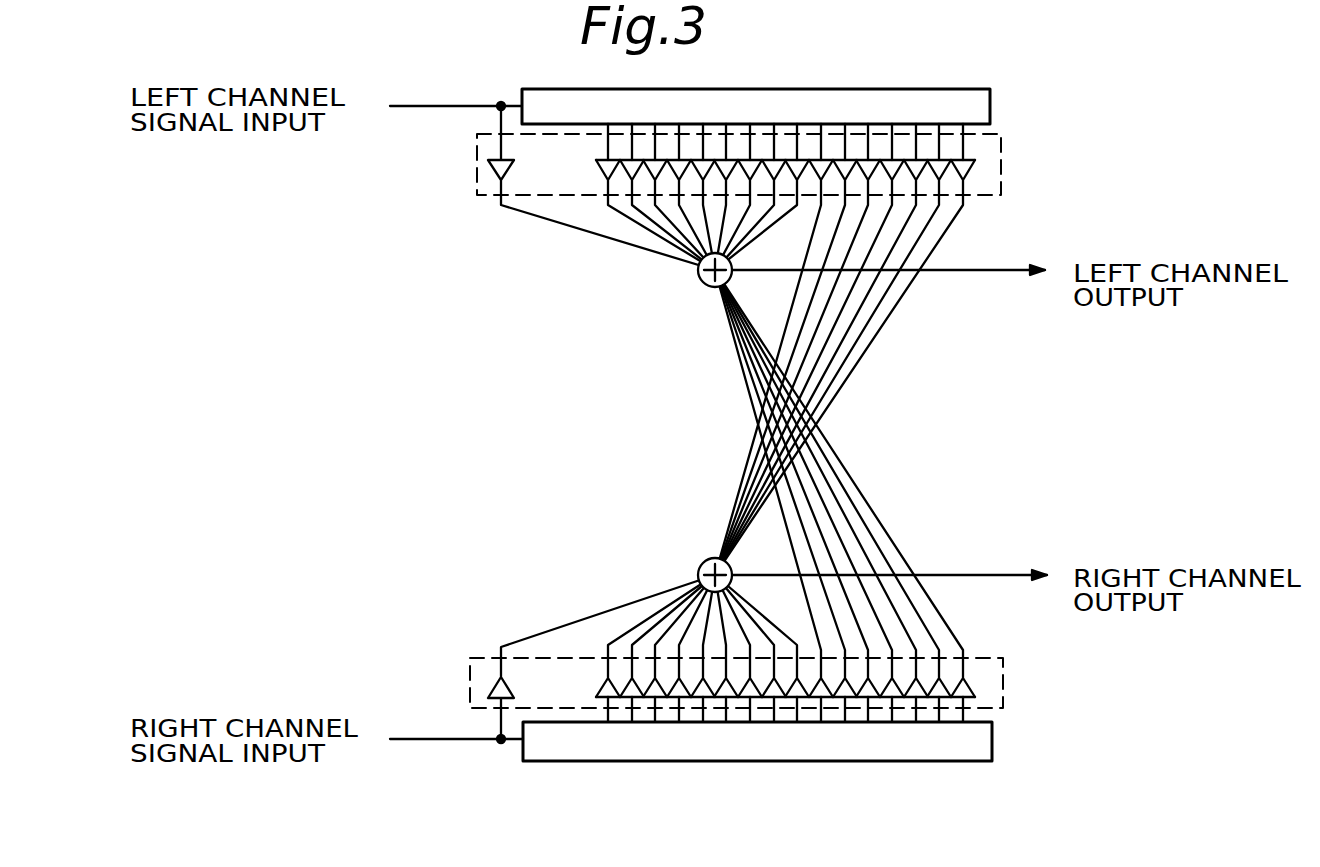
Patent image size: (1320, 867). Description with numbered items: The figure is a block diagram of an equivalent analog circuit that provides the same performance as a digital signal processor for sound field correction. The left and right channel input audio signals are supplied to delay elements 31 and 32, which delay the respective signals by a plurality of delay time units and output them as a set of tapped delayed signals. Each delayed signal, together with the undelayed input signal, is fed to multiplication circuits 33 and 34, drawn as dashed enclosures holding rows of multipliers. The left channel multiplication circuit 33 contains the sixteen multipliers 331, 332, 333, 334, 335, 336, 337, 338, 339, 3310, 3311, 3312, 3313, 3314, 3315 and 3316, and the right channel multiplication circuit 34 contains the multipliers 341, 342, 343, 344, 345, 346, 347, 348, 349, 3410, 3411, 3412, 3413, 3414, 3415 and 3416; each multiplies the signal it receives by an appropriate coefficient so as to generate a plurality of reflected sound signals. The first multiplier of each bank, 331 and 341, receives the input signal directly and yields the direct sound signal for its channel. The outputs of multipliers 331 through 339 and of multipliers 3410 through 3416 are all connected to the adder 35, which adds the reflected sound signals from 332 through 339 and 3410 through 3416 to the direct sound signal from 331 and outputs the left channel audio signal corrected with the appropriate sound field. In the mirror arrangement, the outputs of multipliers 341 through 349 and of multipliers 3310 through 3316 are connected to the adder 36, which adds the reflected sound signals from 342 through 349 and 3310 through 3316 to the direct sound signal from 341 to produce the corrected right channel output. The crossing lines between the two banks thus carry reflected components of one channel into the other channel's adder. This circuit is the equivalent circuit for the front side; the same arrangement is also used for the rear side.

The delay element 31 is at (975, 90).
The delay element 32 is at (993, 750).
The multiplication circuit 33 is at (1003, 150).
The multiplication circuit 34 is at (1003, 707).
The adder 35 is at (714, 289).
The adder 36 is at (715, 556).
The multiplier 331 is at (488, 172).
The multiplier 332 is at (593, 170).
The multiplier 333 is at (623, 170).
The multiplier 334 is at (640, 240).
The multiplier 335 is at (660, 237).
The multiplier 336 is at (667, 262).
The multiplier 337 is at (693, 248).
The multiplier 338 is at (745, 240).
The multiplier 339 is at (790, 212).
The multiplier 3310 is at (800, 160).
The multiplier 3311 is at (905, 312).
The multiplier 3312 is at (925, 283).
The multiplier 3313 is at (945, 248).
The multiplier 3314 is at (960, 228).
The multiplier 3315 is at (965, 208).
The multiplier 3316 is at (977, 172).
The multiplier 341 is at (488, 690).
The multiplier 342 is at (592, 672).
The multiplier 343 is at (612, 662).
The multiplier 344 is at (632, 665).
The multiplier 345 is at (655, 665).
The multiplier 346 is at (678, 665).
The multiplier 347 is at (690, 565).
The multiplier 348 is at (745, 515).
The multiplier 349 is at (790, 650).
The multiplier 3410 is at (840, 660).
The multiplier 3411 is at (880, 662).
The multiplier 3412 is at (905, 672).
The multiplier 3413 is at (918, 677).
The multiplier 3414 is at (948, 682).
The multiplier 3415 is at (968, 684).
The multiplier 3416 is at (980, 693).